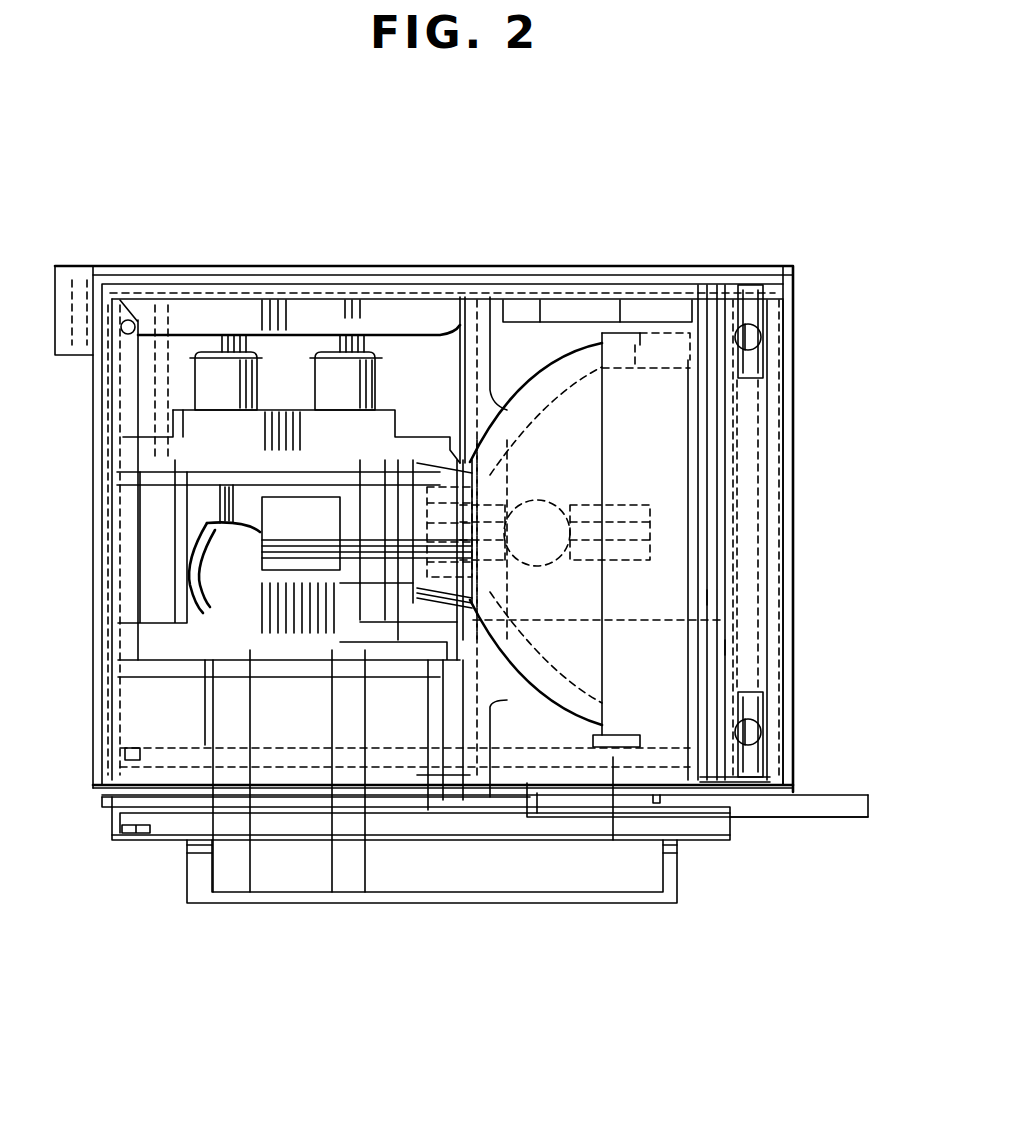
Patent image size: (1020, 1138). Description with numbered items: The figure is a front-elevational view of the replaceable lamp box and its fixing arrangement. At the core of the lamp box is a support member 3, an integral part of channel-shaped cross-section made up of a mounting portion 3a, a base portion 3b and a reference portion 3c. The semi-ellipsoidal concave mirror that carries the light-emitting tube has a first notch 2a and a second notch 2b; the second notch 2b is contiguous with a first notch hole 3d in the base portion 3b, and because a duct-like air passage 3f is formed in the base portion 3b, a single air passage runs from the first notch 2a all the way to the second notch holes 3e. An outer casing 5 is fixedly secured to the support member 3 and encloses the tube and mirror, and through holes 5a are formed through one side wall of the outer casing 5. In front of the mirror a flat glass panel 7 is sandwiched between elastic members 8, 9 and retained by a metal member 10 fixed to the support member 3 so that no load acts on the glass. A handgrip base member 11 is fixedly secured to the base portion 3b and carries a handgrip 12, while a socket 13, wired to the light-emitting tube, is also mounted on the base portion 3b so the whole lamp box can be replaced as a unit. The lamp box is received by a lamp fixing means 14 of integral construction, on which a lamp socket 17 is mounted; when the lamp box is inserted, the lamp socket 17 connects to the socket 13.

The first notch 2a is at (682, 723).
The second notch 2b is at (680, 347).
The support member 3 is at (827, 817).
The mounting portion 3a is at (700, 325).
The base portion 3b is at (617, 837).
The reference portion 3c is at (622, 313).
The first notch hole 3d is at (752, 758).
The second notch holes 3e is at (107, 807).
The duct-like air passage 3f is at (417, 776).
The outer casing 5 is at (430, 312).
The through holes 5a is at (400, 365).
The flat glass panel 7 is at (720, 505).
The elastic member 8 is at (708, 600).
The elastic member 9 is at (727, 645).
The metal member 10 is at (767, 667).
The handgrip base member 11 is at (717, 840).
The handgrip 12 is at (623, 903).
The socket 13 is at (267, 627).
The lamp fixing means 14 is at (80, 267).
The lamp socket 17 is at (203, 427).